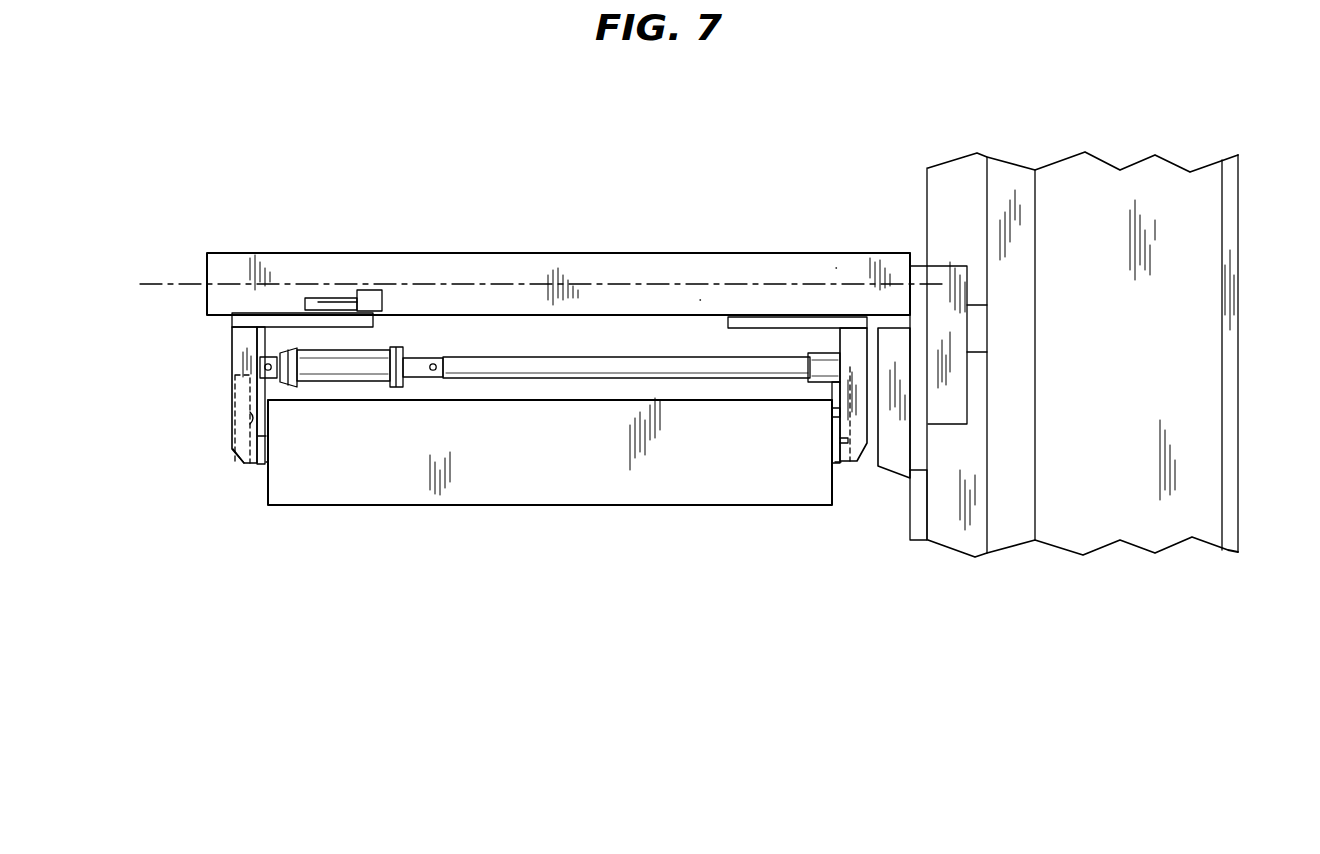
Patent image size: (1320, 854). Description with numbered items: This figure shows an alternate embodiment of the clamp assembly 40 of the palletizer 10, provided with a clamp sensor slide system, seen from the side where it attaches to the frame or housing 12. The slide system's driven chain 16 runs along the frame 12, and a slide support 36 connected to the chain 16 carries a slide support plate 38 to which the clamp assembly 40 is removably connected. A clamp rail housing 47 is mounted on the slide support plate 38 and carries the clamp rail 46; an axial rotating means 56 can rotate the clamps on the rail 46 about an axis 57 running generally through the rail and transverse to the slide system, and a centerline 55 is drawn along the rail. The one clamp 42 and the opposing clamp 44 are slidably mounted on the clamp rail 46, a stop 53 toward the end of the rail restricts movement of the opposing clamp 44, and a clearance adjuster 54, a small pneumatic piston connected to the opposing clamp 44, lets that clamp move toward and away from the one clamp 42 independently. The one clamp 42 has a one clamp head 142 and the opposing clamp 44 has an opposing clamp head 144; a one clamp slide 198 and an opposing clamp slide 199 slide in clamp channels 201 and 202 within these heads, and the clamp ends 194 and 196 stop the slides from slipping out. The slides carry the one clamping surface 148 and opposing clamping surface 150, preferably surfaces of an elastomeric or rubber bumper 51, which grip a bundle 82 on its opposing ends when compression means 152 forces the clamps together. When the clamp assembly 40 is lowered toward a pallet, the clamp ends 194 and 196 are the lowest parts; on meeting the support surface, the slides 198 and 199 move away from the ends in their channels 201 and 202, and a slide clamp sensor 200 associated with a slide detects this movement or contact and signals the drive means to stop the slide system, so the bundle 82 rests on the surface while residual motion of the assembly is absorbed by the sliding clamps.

The palletizer 10 is at (560, 105).
The clamp assembly 40 is at (285, 185).
The clamp rail 46 is at (513, 320).
The longitudinal axis 55 is at (175, 284).
The clearance adjuster 54 is at (374, 291).
The axis 57 is at (701, 292).
The clamp rail housing 47 is at (836, 266).
The stop 53 is at (237, 338).
The opposing clamp head 144 is at (240, 456).
The slide clamp sensor 200 is at (236, 380).
The clamp channel 202 is at (250, 418).
The opposing clamp 44 is at (260, 463).
The clamp end 196 is at (252, 465).
The compression means 152 is at (400, 387).
The bundle 82 is at (628, 507).
The elastomeric or rubber bumper 51 is at (268, 424).
The opposing clamp slide 199 is at (266, 436).
The opposing clamping surface 150 is at (268, 463).
The one clamping surface 148 is at (838, 458).
The one clamp 42 is at (852, 465).
The clamp channel 201 is at (830, 430).
The one clamp slide 198 is at (838, 440).
The clamp end 194 is at (840, 466).
The one clamp head 142 is at (870, 468).
The slide support plate 38 is at (946, 277).
The axial rotating means 56 is at (918, 478).
The slide support 36 is at (988, 327).
The driven chain 16 is at (1038, 461).
The frame or housing 12 is at (1240, 448).